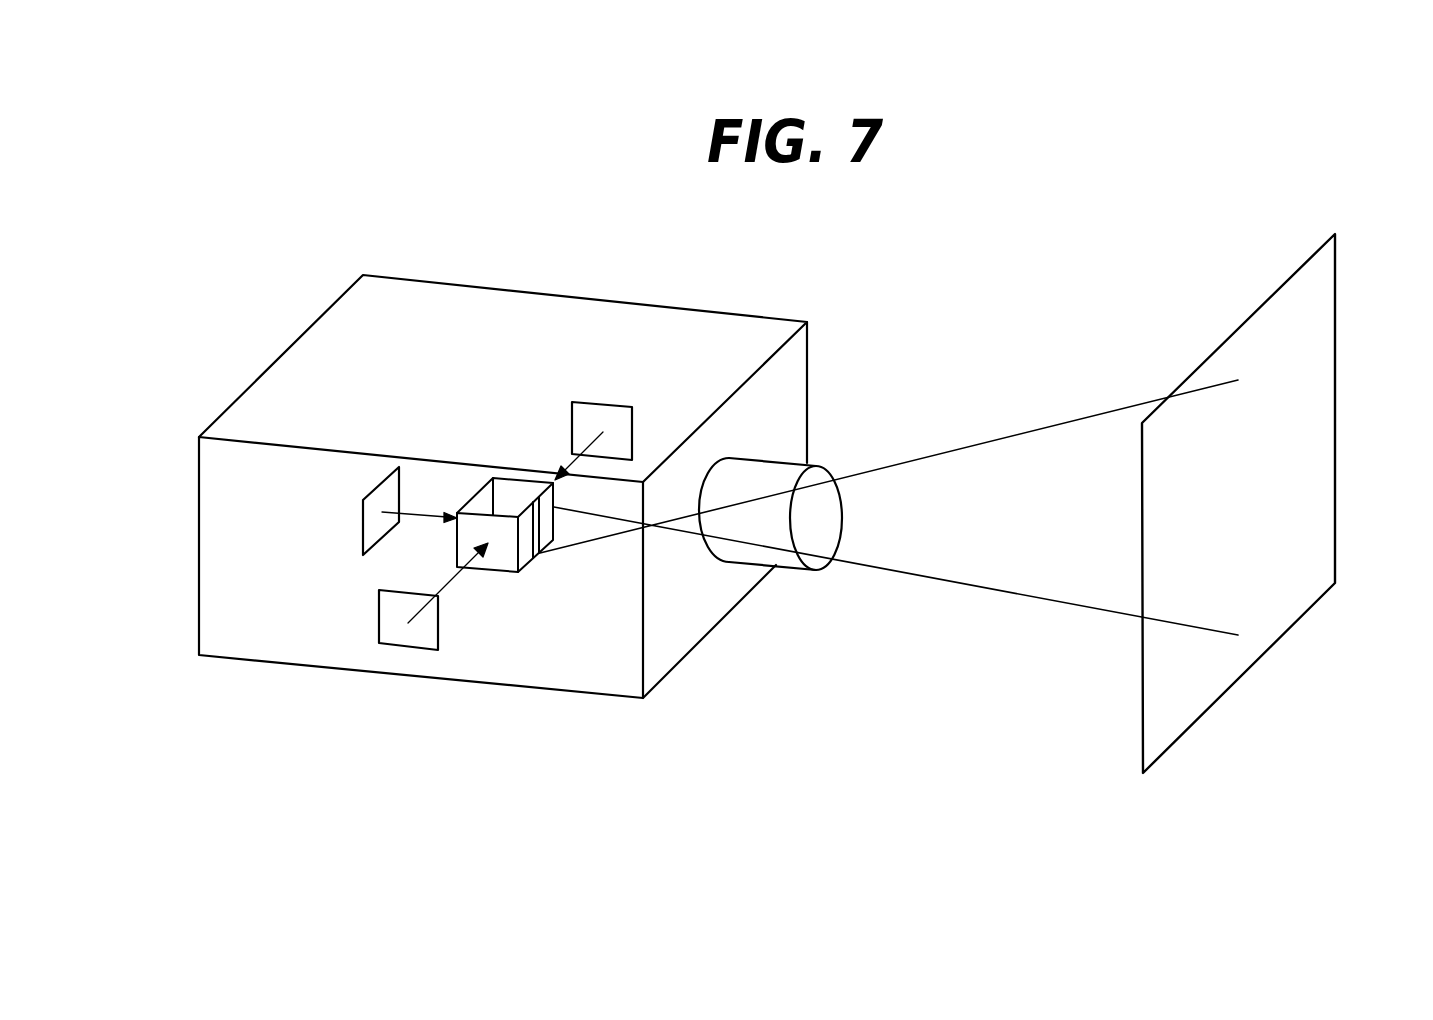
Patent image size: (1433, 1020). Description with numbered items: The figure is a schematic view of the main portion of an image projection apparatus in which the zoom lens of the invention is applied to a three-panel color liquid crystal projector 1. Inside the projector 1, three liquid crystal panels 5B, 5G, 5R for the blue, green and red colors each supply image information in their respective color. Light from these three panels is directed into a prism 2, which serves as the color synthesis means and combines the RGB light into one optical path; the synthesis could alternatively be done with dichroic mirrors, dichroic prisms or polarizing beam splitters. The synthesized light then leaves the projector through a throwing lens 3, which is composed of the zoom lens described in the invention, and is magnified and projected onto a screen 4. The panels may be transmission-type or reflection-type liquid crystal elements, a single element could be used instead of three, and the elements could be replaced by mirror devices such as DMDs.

The color liquid crystal projector 1 is at (302, 336).
The prism 2 is at (507, 574).
The throwing lens 3 is at (748, 555).
The screen 4 is at (1325, 468).
The liquid crystal panel for G 5G is at (362, 518).
The liquid crystal panel for R 5R is at (379, 616).
The liquid crystal panel for B 5B is at (600, 403).